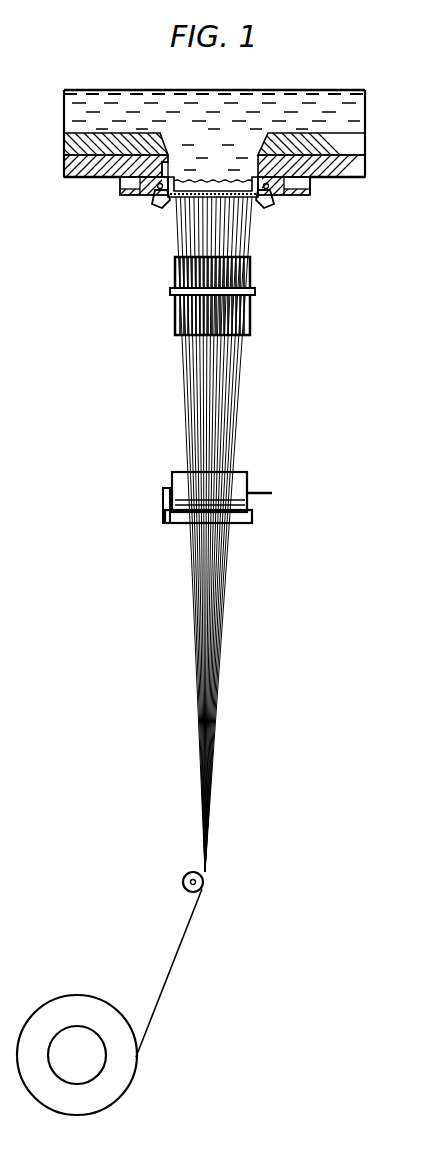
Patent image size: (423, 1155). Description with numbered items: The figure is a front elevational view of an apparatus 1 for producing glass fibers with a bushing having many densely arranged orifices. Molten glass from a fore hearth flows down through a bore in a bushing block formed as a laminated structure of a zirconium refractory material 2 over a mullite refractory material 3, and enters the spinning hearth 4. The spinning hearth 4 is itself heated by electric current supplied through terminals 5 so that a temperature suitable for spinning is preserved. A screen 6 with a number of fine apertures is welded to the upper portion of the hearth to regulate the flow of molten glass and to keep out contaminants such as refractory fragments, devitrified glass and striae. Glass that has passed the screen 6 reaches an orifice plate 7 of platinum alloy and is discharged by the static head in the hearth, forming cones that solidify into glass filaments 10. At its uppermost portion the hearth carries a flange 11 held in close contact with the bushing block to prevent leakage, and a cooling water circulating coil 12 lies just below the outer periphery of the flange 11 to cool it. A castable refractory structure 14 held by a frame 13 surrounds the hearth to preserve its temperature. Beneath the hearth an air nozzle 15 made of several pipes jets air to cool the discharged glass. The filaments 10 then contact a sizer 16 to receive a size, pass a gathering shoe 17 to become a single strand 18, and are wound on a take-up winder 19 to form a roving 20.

The spinning tank 1 is at (366, 103).
The zirconium refractory material 2 is at (64, 145).
The mullite refractory material 3 is at (64, 170).
The spinning hearth 4 is at (257, 197).
The terminals 5 is at (152, 204).
The screen 6 is at (212, 181).
The orifice plate 7 is at (186, 198).
The glass filaments 10 is at (252, 243).
The flange 11 is at (166, 168).
The cooling water circulating coil 12 is at (278, 197).
The frame 13 is at (311, 192).
The castable refractory structure 14 is at (118, 192).
The air nozzle 15 is at (175, 272).
The sizer 16 is at (247, 476).
The gathering shoe 17 is at (185, 875).
The strand 18 is at (193, 926).
The take-up winder 19 is at (92, 1040).
The roving 20 is at (77, 996).